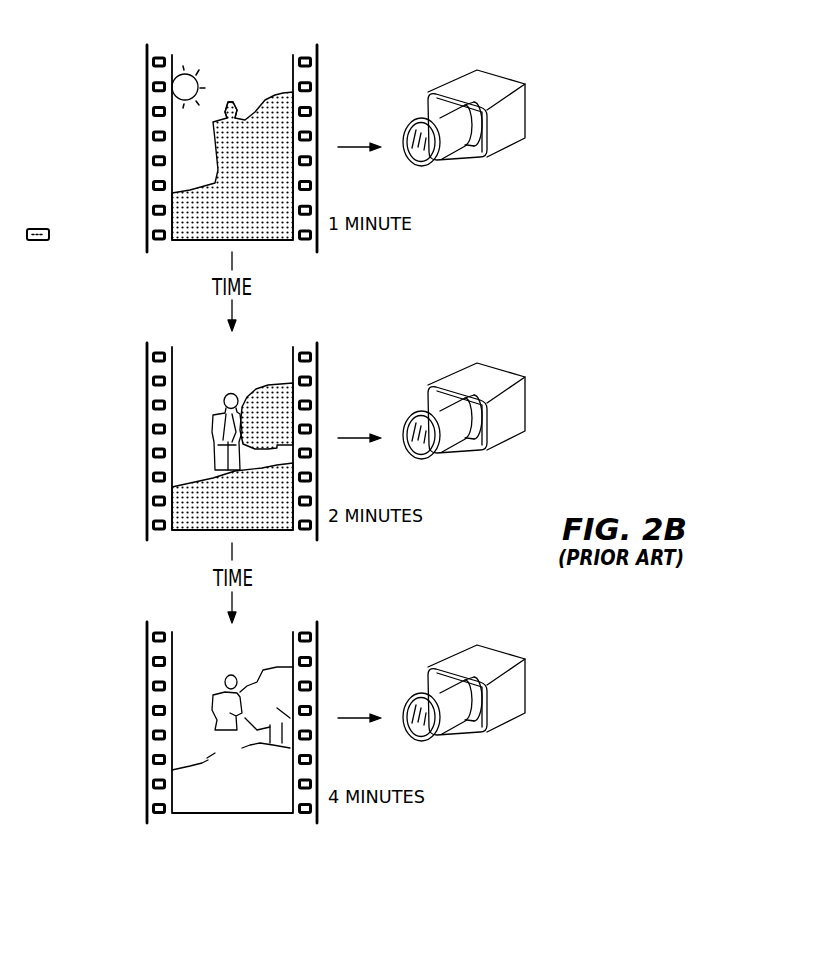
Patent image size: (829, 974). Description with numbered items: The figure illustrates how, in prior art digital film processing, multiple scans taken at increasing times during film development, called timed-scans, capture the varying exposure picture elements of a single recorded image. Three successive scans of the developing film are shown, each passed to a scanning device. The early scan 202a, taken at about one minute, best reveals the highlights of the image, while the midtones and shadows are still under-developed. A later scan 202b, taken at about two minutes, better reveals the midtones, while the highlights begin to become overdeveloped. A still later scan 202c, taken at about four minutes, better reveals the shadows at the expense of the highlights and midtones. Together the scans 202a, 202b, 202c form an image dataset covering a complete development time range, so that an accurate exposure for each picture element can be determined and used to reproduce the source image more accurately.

The early scan 202a is at (165, 164).
The second image frame 202b is at (165, 457).
The third image frame 202c is at (120, 712).